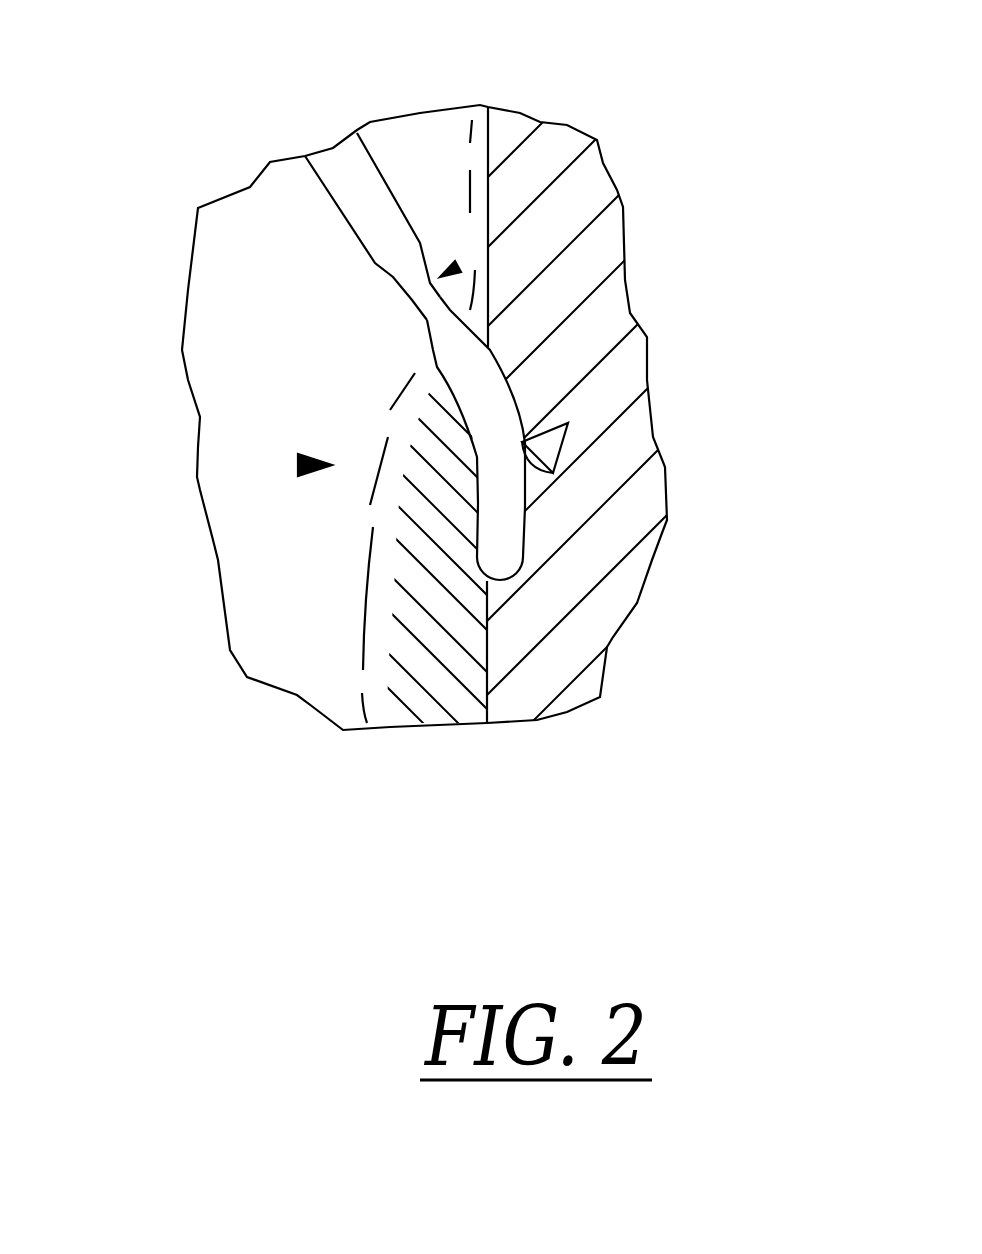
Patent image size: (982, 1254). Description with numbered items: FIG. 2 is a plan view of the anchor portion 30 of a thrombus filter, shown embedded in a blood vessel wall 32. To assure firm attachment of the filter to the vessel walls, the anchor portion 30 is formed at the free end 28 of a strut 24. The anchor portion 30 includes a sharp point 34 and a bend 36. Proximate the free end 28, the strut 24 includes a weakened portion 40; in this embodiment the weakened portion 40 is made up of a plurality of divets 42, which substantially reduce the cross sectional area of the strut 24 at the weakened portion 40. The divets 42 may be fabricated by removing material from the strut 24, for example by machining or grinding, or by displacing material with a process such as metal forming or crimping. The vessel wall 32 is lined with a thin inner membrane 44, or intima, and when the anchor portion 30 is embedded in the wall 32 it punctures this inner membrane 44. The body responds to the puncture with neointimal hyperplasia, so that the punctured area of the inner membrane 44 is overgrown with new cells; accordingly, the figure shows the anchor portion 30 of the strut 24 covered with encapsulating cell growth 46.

The strut 24 is at (365, 198).
The free end 28 is at (322, 465).
The anchor portion 30 is at (500, 498).
The vessel wall 32 is at (566, 200).
The sharp point 34 is at (548, 447).
The bend 36 is at (505, 570).
The weakened portion 40 is at (445, 275).
The divets 42 is at (438, 297).
The inner membrane 44 is at (483, 155).
The encapsulating cell growth 46 is at (405, 637).